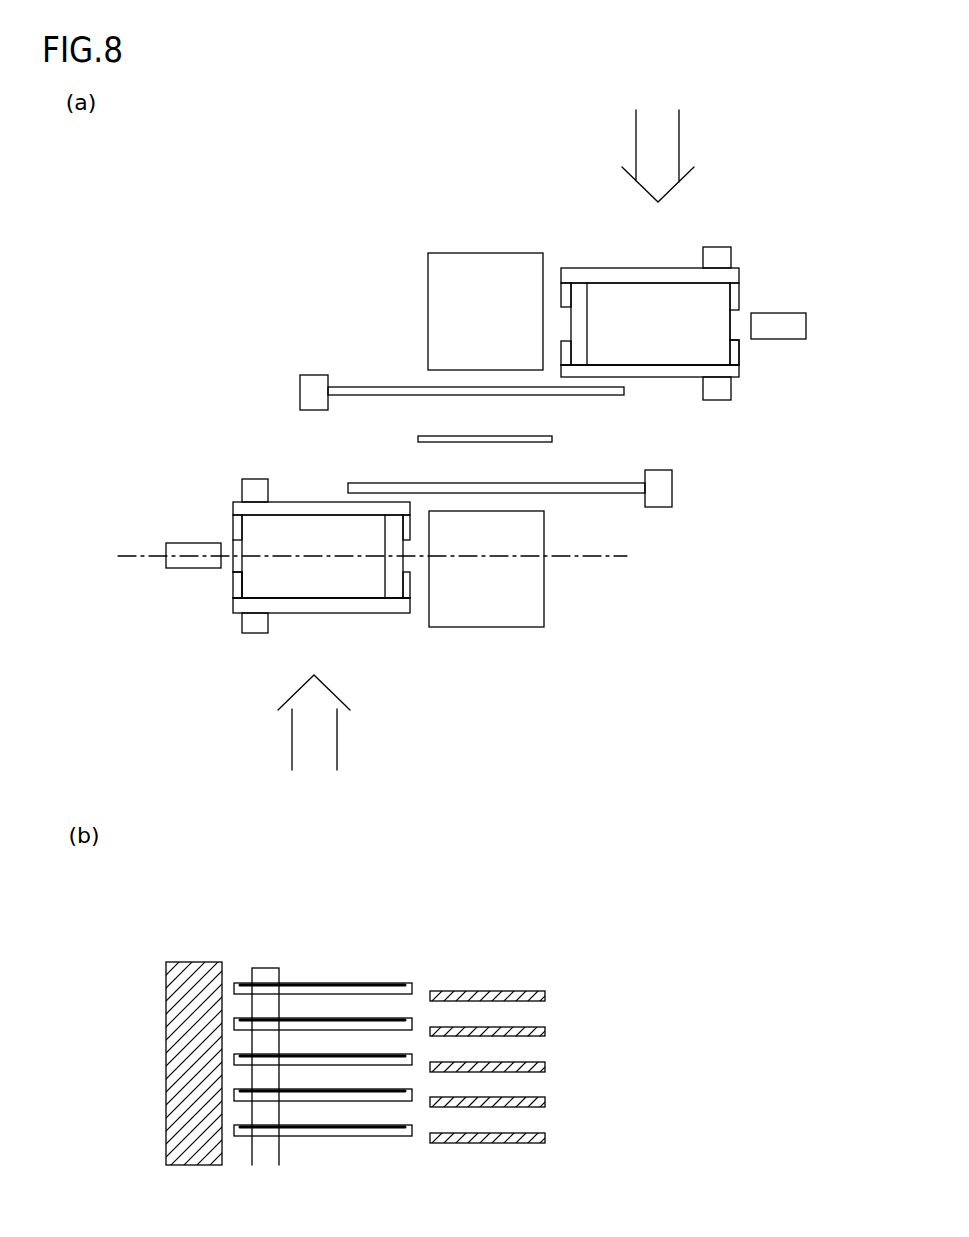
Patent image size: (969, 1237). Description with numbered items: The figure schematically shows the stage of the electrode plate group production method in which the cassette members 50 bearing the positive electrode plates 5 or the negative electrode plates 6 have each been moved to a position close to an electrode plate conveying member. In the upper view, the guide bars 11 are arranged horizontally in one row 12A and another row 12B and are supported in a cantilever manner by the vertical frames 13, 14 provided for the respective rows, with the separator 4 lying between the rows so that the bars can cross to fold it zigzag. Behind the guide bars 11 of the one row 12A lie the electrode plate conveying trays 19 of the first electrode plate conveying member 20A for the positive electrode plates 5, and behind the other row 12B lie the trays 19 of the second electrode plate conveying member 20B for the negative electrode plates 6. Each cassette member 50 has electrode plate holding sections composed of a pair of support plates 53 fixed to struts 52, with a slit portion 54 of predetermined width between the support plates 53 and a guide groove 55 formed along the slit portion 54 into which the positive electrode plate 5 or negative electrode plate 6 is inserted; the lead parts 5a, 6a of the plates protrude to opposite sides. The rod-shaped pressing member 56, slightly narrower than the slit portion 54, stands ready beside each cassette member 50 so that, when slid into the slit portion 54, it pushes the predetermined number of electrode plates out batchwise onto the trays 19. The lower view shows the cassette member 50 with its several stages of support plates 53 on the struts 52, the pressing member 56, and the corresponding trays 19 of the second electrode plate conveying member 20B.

The separator 4 is at (552, 439).
The positive electrode plate 5 is at (633, 290).
The lead part 5a is at (579, 290).
The negative electrode plate 6 is at (313, 523).
The lead part 6a is at (392, 592).
The guide bar 11 is at (382, 387).
The one row 12A is at (288, 393).
The another row 12B is at (687, 488).
The vertical frame 13 is at (313, 382).
The vertical frame 14 is at (662, 505).
The electrode plate conveying tray 19 is at (442, 282).
The first electrode plate conveying member 20A is at (505, 222).
The second electrode plate conveying member 20B is at (453, 658).
The cassette member 50 is at (762, 162).
The strut 52 is at (716, 252).
The support plate 53 is at (673, 375).
The slit portion 54 is at (736, 320).
The guide groove 55 is at (735, 353).
The pressing member 56 is at (793, 318).